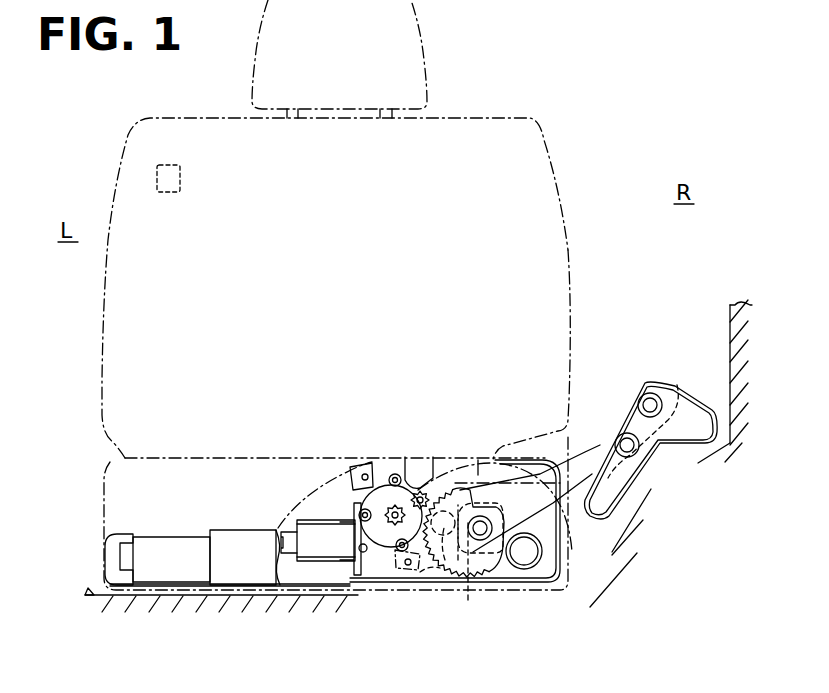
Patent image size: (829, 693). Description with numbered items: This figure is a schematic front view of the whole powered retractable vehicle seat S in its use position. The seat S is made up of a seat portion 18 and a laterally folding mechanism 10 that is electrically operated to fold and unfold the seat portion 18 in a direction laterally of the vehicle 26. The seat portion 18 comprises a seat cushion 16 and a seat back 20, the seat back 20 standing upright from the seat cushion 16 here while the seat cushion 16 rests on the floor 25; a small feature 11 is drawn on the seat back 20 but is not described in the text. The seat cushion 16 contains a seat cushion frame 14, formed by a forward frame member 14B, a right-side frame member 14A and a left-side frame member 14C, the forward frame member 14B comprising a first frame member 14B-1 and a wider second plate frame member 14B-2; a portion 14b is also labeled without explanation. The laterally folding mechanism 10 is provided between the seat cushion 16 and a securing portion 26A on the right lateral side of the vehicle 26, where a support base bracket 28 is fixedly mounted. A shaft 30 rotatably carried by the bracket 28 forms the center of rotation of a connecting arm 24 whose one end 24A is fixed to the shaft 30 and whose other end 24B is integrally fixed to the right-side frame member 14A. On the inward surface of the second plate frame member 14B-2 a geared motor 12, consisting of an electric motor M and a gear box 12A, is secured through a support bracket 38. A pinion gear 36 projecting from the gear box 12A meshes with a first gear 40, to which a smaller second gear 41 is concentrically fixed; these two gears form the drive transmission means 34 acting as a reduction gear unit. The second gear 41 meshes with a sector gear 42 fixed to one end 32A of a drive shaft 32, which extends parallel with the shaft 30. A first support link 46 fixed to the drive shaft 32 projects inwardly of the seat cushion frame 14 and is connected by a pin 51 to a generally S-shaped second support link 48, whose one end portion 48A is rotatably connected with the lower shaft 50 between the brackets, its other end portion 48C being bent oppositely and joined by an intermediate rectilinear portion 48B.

The powered retractable vehicle seat S is at (592, 102).
The laterally folding mechanism 10 is at (688, 255).
The sensor 11 is at (163, 165).
The geared motor 12 is at (315, 520).
The gear box 12A is at (387, 495).
The seat cushion frame 14 is at (235, 528).
The right-side frame member 14A is at (550, 556).
The forward frame member 14B is at (310, 345).
The first frame member 14B-1 is at (170, 540).
The second plate frame member 14B-2 is at (248, 540).
The left-side frame member 14C is at (113, 535).
The frame portion 14b is at (478, 460).
The seat cushion 16 is at (160, 457).
The seat portion 18 is at (576, 322).
The seat back 20 is at (553, 229).
The connecting arm 24 is at (585, 446).
The one end of connecting arm 24A is at (677, 385).
The another end of connecting arm 24B is at (560, 552).
The floor 25 is at (88, 593).
The vehicle 26 is at (730, 333).
The securing portion 26A is at (723, 457).
The support base bracket 28 is at (695, 408).
The shaft 30 is at (642, 396).
The drive shaft 32 is at (466, 475).
The one end of drive shaft 32A is at (492, 540).
The drive transmission means 34 is at (393, 474).
The pinion gear 36 is at (385, 565).
The support bracket 38 is at (375, 500).
The first gear 40 is at (418, 490).
The second gear 41 is at (424, 452).
The sector gear 42 is at (436, 548).
The first support link 46 is at (476, 585).
The second support link 48 is at (544, 468).
The one end portion of second support link 48A is at (650, 487).
The intermediate rectilinear portion 48B is at (495, 455).
The another end portion of second support link 48C is at (458, 560).
The lower shaft 50 is at (640, 455).
The pin 51 is at (420, 572).
The electric motor M is at (325, 548).